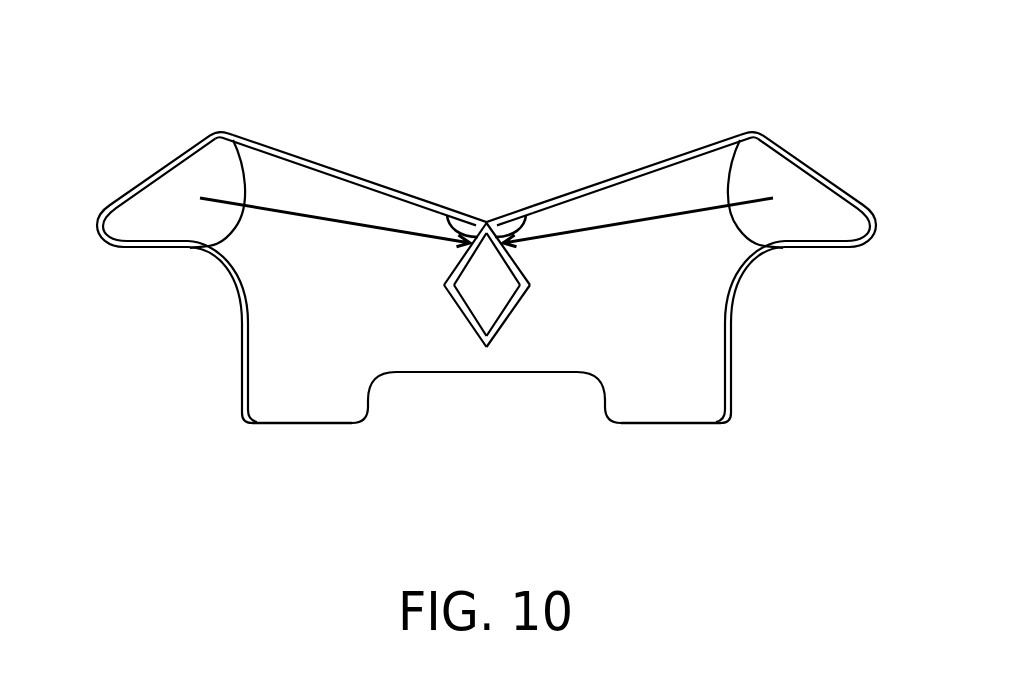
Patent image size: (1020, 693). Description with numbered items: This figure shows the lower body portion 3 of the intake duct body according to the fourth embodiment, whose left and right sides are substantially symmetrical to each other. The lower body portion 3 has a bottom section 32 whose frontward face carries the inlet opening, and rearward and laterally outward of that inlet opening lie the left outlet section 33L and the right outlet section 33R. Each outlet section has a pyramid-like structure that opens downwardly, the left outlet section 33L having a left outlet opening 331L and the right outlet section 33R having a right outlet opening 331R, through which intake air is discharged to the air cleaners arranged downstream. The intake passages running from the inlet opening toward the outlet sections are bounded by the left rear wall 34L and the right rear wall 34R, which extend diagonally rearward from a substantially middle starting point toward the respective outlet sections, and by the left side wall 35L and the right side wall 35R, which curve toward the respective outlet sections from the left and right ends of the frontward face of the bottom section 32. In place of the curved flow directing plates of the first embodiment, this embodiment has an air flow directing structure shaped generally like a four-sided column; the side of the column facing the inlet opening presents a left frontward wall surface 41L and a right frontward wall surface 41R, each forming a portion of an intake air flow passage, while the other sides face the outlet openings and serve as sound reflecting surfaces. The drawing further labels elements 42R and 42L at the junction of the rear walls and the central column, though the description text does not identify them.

The lower body portion 3 is at (126, 139).
The bottom section 32 is at (590, 220).
The right outlet section 33R is at (98, 213).
The left outlet section 33L is at (875, 213).
The right outlet opening 331R is at (162, 215).
The left outlet opening 331L is at (811, 215).
The right rear wall 34R is at (330, 166).
The left rear wall 34L is at (643, 166).
The right side wall 35R is at (241, 372).
The left side wall 35L is at (732, 372).
The right frontward wall surface 41R is at (460, 310).
The left frontward wall surface 41L is at (513, 310).
The right connecting portion 42R is at (448, 214).
The left connecting portion 42L is at (526, 214).